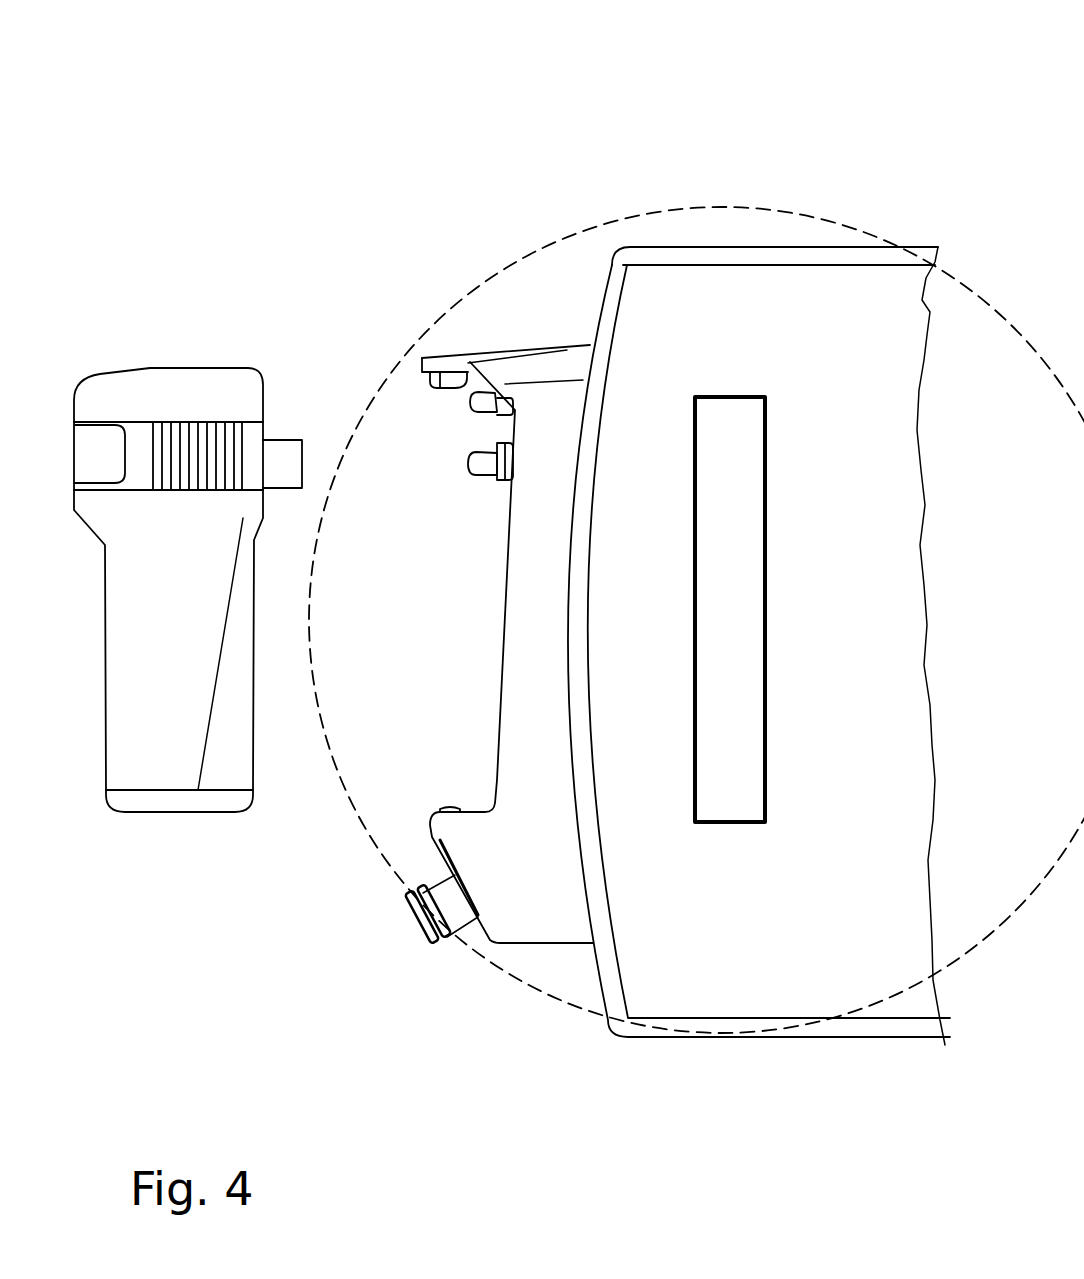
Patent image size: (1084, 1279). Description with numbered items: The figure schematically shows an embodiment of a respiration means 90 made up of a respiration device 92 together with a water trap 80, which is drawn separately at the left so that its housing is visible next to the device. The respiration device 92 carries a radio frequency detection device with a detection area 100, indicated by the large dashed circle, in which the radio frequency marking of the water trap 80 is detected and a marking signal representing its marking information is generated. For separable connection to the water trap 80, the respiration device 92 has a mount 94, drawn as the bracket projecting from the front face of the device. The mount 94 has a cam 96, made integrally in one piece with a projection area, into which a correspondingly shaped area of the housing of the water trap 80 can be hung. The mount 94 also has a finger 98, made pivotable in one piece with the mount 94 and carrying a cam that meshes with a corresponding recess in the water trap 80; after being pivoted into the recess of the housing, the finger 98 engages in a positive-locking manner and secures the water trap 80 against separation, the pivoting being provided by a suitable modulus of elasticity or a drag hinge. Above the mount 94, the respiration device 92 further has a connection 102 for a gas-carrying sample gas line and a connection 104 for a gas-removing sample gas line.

The water trap 80 is at (125, 347).
The respiration means 90 is at (415, 155).
The respiration device 92 is at (598, 272).
The mount 94 is at (486, 750).
The cam 96 is at (426, 789).
The finger 98 is at (733, 455).
The detection area 100 is at (413, 325).
The connection 102 is at (466, 428).
The connection 104 is at (473, 490).